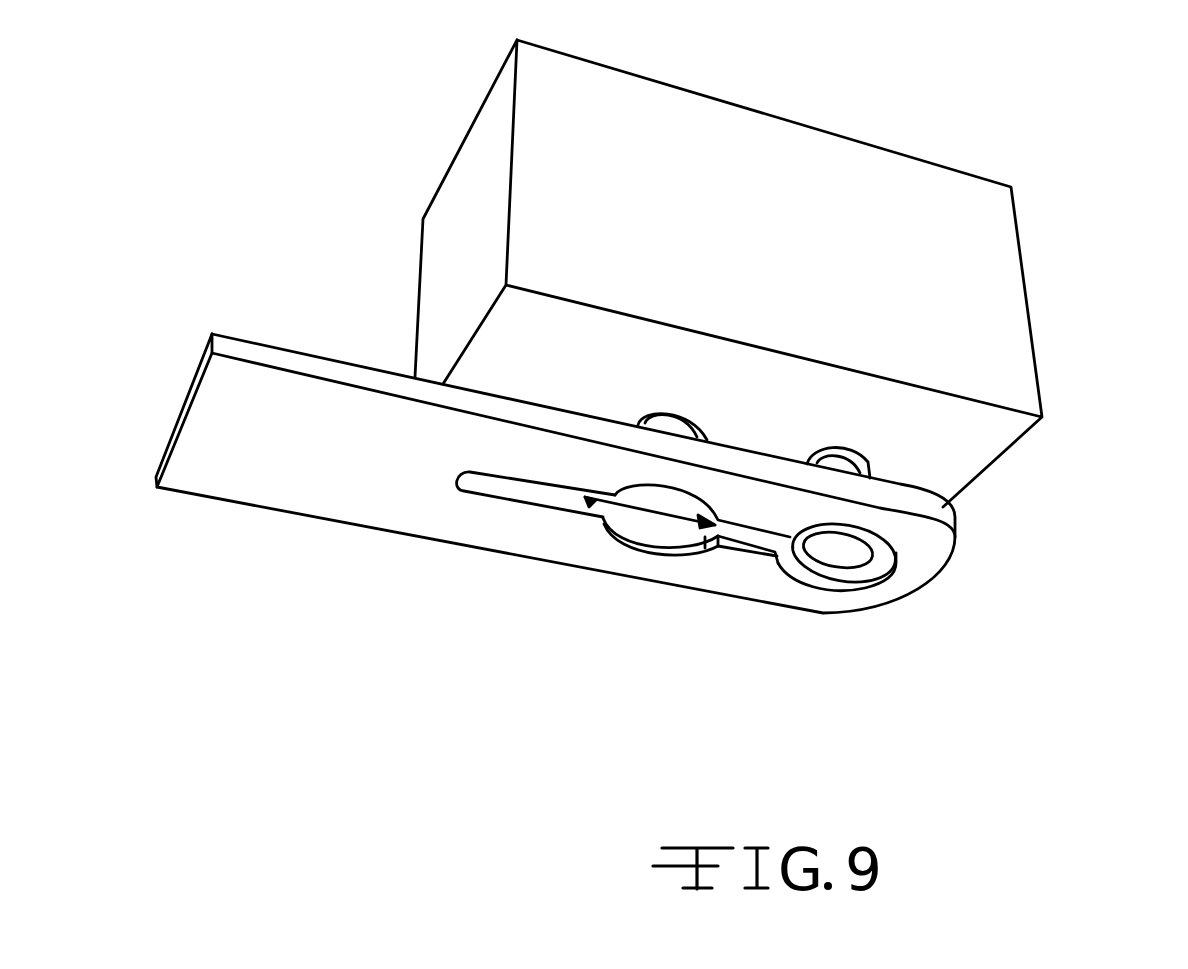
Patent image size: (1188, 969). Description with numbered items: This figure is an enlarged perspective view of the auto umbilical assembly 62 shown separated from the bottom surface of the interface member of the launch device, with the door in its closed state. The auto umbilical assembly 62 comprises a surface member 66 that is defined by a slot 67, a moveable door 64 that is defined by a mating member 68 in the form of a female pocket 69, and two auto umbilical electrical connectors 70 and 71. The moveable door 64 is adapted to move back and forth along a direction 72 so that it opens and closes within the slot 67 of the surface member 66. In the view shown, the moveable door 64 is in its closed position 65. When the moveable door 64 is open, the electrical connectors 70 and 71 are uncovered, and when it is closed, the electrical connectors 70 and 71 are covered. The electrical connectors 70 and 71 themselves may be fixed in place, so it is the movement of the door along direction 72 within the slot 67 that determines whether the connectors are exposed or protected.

The auto umbilical assembly 62 is at (1020, 175).
The surface member 66 is at (372, 487).
The slot 67 is at (513, 488).
The moveable door 64 is at (677, 585).
The closed position 65 is at (652, 528).
The direction 72 is at (678, 528).
The mating member 68 is at (839, 614).
The female pocket 69 is at (837, 547).
The auto umbilical electrical connector 70 is at (640, 417).
The auto umbilical electrical connector 71 is at (868, 460).